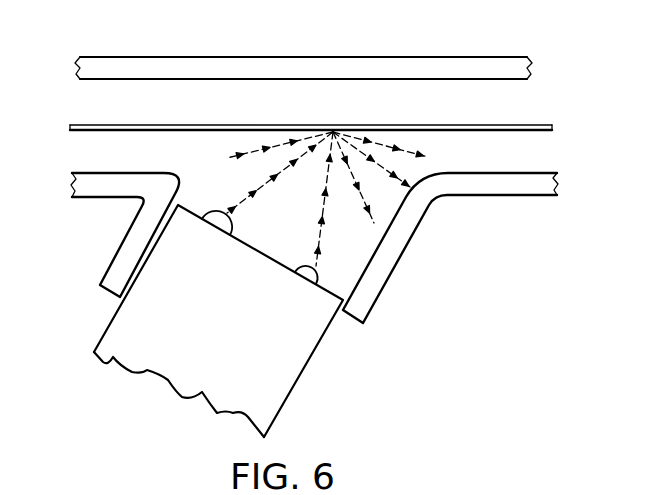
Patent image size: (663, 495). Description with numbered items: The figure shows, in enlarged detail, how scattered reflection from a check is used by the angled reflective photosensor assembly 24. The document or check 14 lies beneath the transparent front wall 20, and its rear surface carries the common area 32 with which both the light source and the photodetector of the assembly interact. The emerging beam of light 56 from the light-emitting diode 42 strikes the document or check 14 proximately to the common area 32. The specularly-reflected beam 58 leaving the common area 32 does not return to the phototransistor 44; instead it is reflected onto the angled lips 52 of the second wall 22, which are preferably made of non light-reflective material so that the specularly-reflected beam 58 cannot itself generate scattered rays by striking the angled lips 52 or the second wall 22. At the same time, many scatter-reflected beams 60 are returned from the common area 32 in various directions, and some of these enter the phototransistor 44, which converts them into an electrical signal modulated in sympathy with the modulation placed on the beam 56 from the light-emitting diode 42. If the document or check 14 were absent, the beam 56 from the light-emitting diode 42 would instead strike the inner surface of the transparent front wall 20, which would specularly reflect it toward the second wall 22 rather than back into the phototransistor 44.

The document or check 14 is at (77, 125).
The transparent front wall 20 is at (435, 63).
The second wall 22 is at (87, 172).
The reflective photosensor assembly 24 is at (273, 383).
The common area 32 is at (333, 130).
The light-emitting diode 42 is at (213, 210).
The phototransistor 44 is at (316, 274).
The angled lips 52 is at (120, 262).
The emerging beam of light 56 is at (266, 181).
The specularly-reflected beam 58 is at (402, 203).
The scatter-reflected beams 60 is at (262, 146).